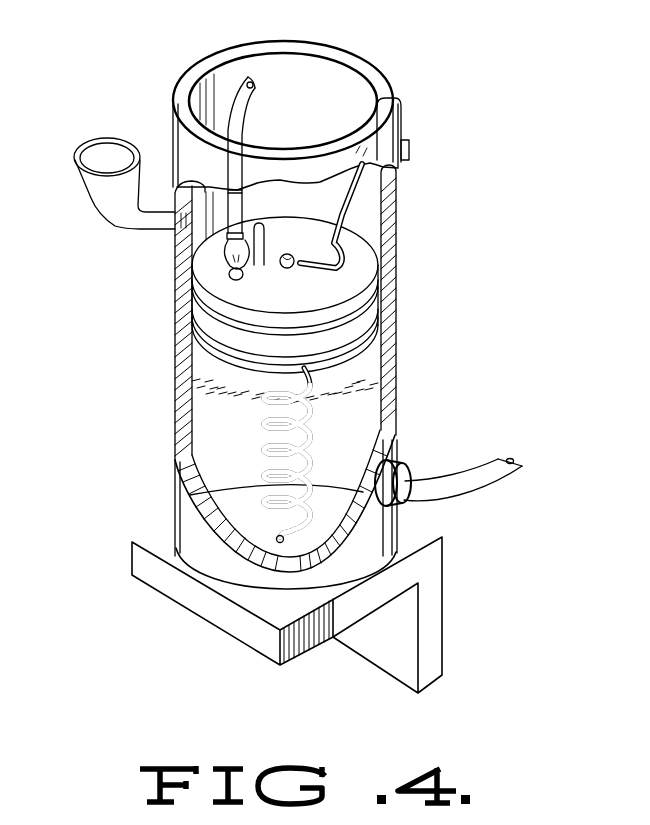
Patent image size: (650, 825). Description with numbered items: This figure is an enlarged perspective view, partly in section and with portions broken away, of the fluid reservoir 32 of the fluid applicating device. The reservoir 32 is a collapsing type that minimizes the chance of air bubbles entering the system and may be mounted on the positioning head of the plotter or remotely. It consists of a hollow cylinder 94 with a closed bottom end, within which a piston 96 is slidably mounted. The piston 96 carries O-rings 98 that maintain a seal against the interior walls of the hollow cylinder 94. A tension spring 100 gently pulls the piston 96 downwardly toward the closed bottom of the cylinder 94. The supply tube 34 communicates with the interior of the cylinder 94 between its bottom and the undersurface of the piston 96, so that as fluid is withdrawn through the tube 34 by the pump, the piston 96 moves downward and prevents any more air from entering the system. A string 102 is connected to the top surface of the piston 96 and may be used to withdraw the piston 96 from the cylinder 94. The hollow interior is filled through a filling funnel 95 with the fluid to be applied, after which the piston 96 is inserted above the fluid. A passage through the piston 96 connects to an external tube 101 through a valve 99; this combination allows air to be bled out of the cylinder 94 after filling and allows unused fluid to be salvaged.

The reservoir 32 is at (141, 290).
The supply tube 34 is at (504, 459).
The hollow cylinder 94 is at (212, 62).
The filling funnel 95 is at (90, 178).
The piston 96 is at (329, 295).
The O-rings 98 is at (380, 292).
The valve 99 is at (250, 254).
The tension spring 100 is at (310, 438).
The external tube 101 is at (254, 84).
The string 102 is at (308, 216).